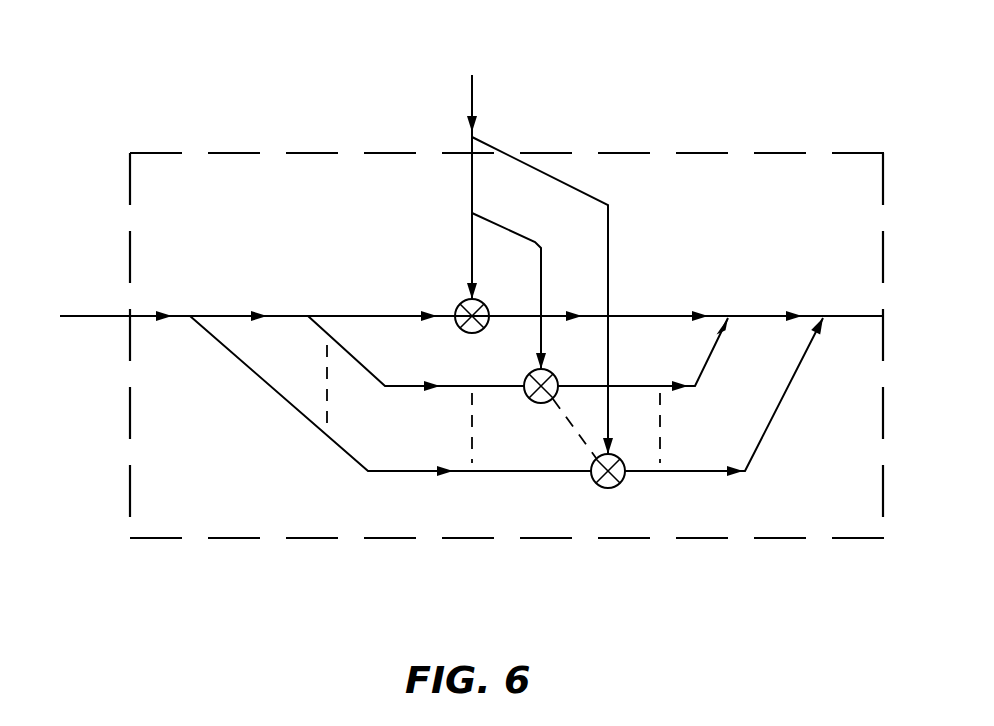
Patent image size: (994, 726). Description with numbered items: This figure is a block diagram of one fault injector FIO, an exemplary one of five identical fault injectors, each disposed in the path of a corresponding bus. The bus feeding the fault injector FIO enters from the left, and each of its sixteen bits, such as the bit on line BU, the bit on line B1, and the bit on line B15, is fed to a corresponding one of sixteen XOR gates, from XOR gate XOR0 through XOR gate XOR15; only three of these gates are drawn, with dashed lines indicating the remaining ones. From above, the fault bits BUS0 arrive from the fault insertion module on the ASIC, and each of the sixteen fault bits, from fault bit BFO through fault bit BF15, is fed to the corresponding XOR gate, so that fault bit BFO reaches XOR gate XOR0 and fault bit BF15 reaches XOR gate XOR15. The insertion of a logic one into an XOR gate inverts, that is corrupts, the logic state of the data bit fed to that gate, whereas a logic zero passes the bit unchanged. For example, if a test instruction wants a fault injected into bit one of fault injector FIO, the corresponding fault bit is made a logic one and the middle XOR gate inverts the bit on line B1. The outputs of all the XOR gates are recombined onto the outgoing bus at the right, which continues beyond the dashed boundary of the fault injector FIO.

The fault injector FIO is at (164, 152).
The bus bit line BU is at (342, 314).
The bus BUS0 fault bits BUS0 is at (472, 92).
The fault bit BF0 BFO is at (608, 221).
The fault bit BF15 is at (608, 256).
The XOR gate XOR0 is at (476, 333).
The bus bit B1 line B1 is at (369, 372).
The bus bit B15 line B15 is at (357, 461).
The XOR gate XOR15 is at (613, 488).